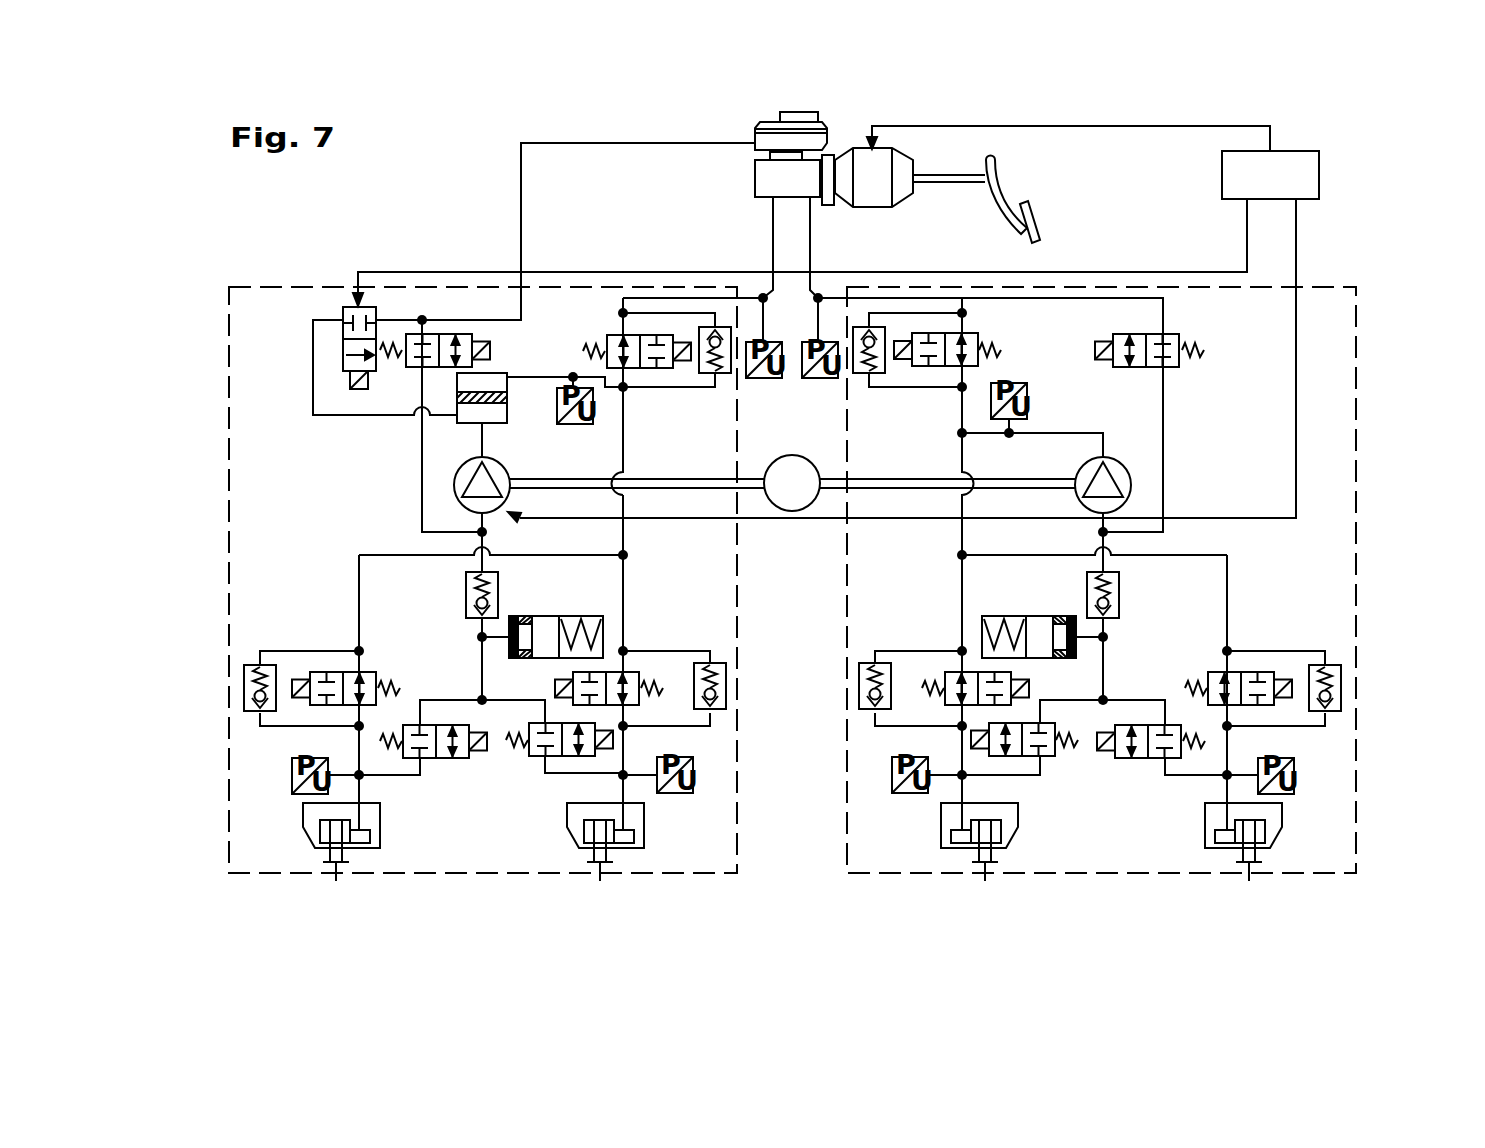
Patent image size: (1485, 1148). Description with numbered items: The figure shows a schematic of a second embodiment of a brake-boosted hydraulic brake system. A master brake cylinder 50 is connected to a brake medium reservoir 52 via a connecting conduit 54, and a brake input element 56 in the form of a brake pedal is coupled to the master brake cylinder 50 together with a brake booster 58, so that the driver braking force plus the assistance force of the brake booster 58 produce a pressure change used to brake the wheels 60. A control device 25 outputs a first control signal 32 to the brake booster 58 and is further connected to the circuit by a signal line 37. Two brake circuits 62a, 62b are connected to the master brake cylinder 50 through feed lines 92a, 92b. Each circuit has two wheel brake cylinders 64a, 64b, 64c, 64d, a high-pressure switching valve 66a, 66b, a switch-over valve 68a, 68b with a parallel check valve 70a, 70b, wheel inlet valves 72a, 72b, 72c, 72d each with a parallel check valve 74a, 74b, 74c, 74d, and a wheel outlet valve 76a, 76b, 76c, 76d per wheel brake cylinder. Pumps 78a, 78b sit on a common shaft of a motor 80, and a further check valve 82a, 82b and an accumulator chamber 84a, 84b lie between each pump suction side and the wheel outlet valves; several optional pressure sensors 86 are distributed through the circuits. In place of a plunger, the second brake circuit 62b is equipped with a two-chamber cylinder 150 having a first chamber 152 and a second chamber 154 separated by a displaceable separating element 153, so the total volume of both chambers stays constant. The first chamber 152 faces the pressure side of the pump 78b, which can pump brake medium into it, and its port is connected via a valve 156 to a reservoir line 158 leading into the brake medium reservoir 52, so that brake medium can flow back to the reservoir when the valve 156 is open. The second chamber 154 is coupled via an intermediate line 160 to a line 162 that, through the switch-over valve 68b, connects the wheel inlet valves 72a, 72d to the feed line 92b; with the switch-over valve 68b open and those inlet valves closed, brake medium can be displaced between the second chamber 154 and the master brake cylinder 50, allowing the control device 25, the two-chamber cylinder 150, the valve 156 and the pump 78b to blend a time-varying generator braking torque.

The control device 25 is at (1310, 172).
The first control signal 32 is at (1091, 125).
The signal line 37 is at (1247, 245).
The master brake cylinder 50 is at (765, 187).
The brake medium reservoir 52 is at (800, 125).
The connecting conduit 54 is at (772, 156).
The brake input element 56 is at (988, 172).
The brake booster 58 is at (896, 162).
The wheel 60 is at (795, 887).
The first brake circuit 62a is at (1356, 583).
The second brake circuit 62b is at (229, 583).
The wheel brake cylinder 64a is at (1197, 827).
The wheel brake cylinder 64b is at (932, 827).
The wheel brake cylinder 64c is at (653, 827).
The wheel brake cylinder 64d is at (388, 827).
The high-pressure switching valve 66a is at (1180, 334).
The high-pressure switching valve 66b is at (446, 333).
The switch-over valve 68a is at (975, 333).
The switch-over valve 68b is at (617, 334).
The check valve 70a is at (867, 388).
The check valve 70b is at (718, 388).
The wheel inlet valve 72a is at (1247, 672).
The wheel inlet valve 72b is at (953, 672).
The wheel inlet valve 72c is at (632, 672).
The wheel inlet valve 72d is at (338, 672).
The check valve 74a is at (1341, 688).
The check valve 74b is at (859, 696).
The check valve 74c is at (726, 676).
The check valve 74d is at (244, 688).
The wheel outlet valve 76a is at (1145, 758).
The wheel outlet valve 76b is at (1052, 757).
The wheel outlet valve 76c is at (533, 757).
The wheel outlet valve 76d is at (441, 758).
The pump 78a is at (1112, 457).
The pump 78b is at (455, 481).
The motor 80 is at (792, 512).
The check valve 82a is at (1119, 598).
The check valve 82b is at (466, 597).
The accumulator chamber 84a is at (1036, 616).
The accumulator chamber 84b is at (548, 616).
The pressure sensor 86 is at (593, 404).
The feed line 92a is at (811, 246).
The feed line 92b is at (772, 246).
The two-chamber cylinder 150 is at (471, 397).
The first chamber 152 is at (470, 433).
The separating element 153 is at (457, 398).
The second chamber 154 is at (442, 390).
The valve 156 is at (348, 302).
The reservoir line 158 is at (617, 143).
The intermediate line 160 is at (573, 377).
The line 162 is at (627, 535).